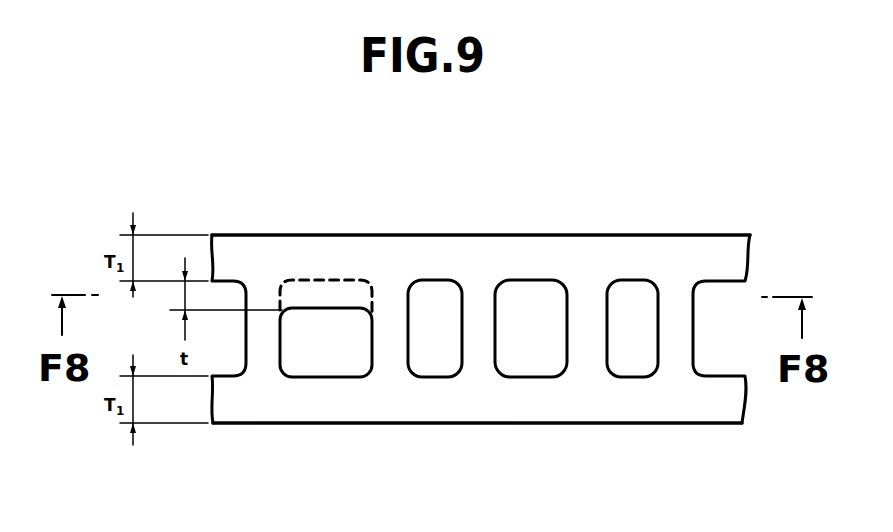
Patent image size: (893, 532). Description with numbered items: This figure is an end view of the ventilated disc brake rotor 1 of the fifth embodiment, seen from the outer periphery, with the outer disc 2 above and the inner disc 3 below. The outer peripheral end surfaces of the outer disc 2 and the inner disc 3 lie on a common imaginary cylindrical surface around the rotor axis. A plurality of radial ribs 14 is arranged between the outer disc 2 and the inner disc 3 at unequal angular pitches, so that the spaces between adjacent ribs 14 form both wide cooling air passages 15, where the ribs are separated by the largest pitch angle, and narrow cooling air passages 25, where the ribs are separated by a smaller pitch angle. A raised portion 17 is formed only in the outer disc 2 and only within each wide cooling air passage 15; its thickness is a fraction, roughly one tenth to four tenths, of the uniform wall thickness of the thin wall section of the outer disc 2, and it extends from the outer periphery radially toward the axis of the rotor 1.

The ventilated rotor 1 is at (610, 232).
The outer disc 2 is at (517, 257).
The inner disc 3 is at (515, 402).
The radial rib 14 is at (257, 343).
The wide cooling air passage 15 is at (303, 357).
The raised portion 17 is at (333, 297).
The narrow cooling air passage 25 is at (430, 303).